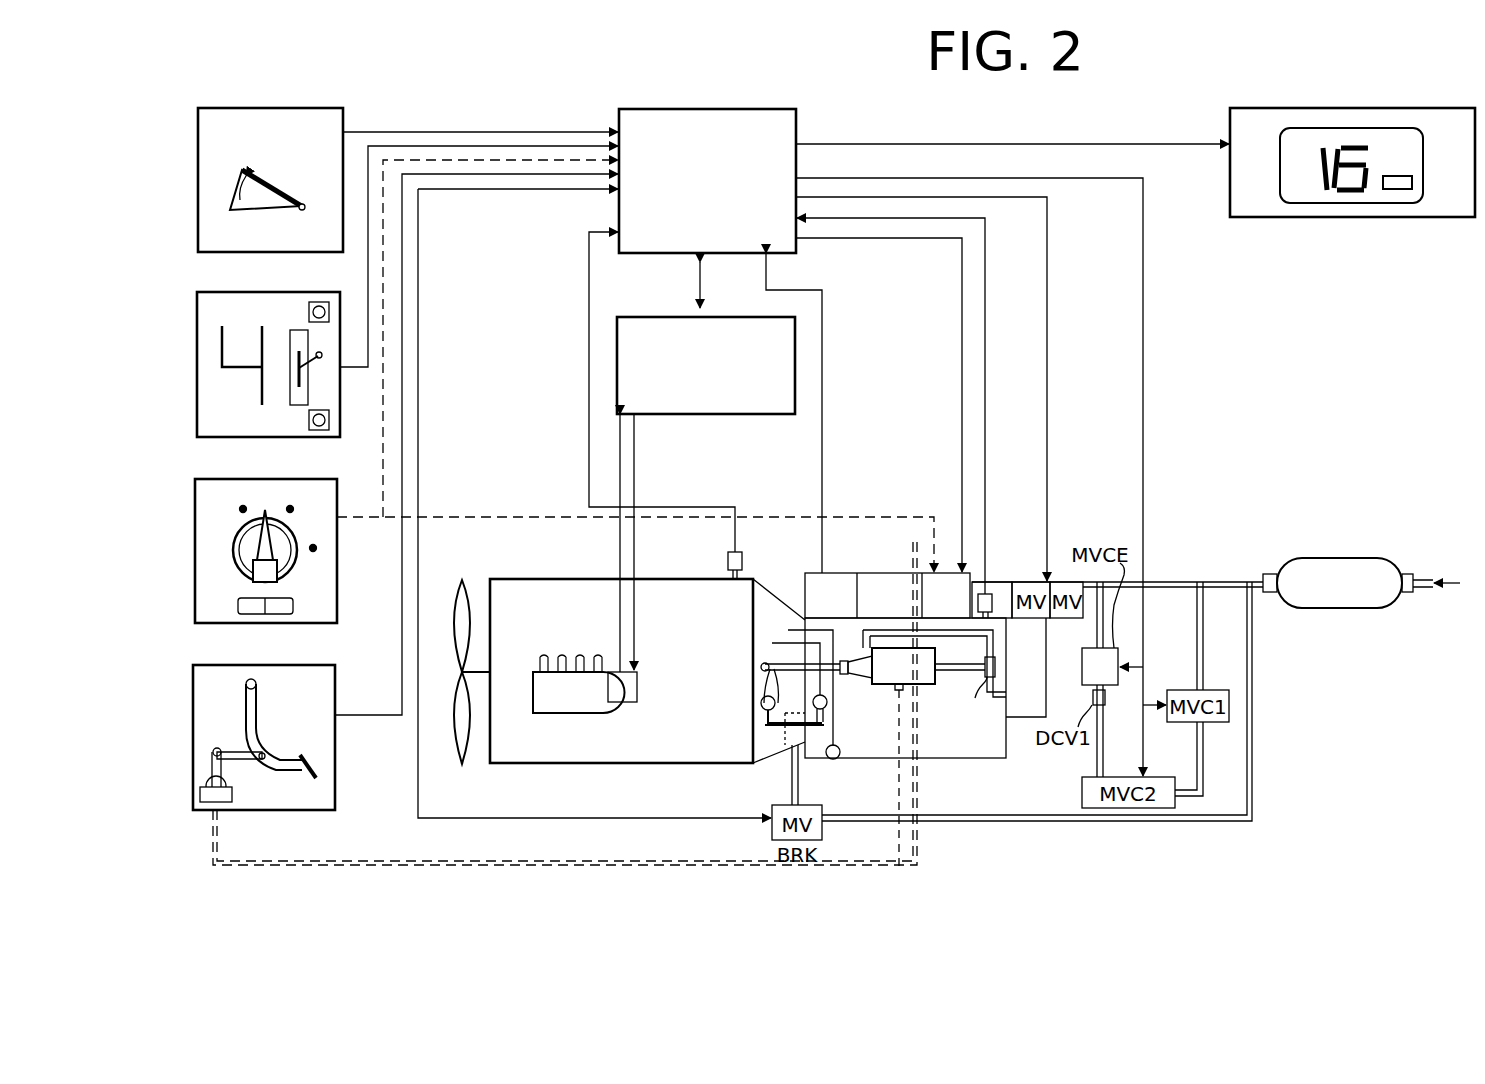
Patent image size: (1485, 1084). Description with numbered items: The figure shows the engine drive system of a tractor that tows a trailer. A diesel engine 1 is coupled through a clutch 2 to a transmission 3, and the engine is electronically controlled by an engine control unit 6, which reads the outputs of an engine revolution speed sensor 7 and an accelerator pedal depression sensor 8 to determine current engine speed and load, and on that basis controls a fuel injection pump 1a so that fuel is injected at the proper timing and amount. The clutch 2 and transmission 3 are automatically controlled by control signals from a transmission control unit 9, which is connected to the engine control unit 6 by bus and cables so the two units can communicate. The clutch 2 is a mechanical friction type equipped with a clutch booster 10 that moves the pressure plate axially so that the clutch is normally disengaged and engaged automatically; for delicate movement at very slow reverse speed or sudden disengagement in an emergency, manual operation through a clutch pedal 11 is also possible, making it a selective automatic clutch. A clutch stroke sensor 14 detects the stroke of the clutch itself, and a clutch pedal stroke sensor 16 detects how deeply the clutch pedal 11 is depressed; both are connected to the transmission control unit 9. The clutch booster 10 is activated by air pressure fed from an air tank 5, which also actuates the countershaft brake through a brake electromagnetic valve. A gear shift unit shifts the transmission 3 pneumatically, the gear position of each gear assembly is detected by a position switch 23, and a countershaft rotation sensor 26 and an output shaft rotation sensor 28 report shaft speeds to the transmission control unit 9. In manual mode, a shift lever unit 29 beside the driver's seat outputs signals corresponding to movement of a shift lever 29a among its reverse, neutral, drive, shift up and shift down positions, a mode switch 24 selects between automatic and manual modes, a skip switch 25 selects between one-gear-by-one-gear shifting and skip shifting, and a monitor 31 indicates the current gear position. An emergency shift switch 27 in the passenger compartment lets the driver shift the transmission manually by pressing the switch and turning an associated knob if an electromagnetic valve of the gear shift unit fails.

The diesel engine 1 is at (603, 647).
The fuel injection pump 1a is at (571, 715).
The clutch 2 is at (775, 764).
The transmission 3 is at (859, 702).
The air tank 5 is at (1340, 558).
The engine control unit 6 is at (661, 317).
The engine revolution speed sensor 7 is at (728, 560).
The accelerator pedal depression sensor 8 is at (198, 200).
The transmission control unit 9 is at (722, 109).
The clutch booster 10 is at (897, 677).
The clutch pedal 11 is at (276, 750).
The clutch stroke sensor 14 is at (827, 706).
The clutch pedal stroke sensor 16 is at (243, 737).
The position switch 23 is at (838, 573).
The mode switch 24 is at (326, 284).
The skip switch 25 is at (314, 430).
The countershaft rotation sensor 26 is at (838, 757).
The emergency shift switch 27 is at (195, 572).
The output shaft rotation sensor 28 is at (996, 590).
The shift lever unit 29 is at (261, 371).
The shift lever 29a is at (319, 358).
The monitor 31 is at (1333, 203).